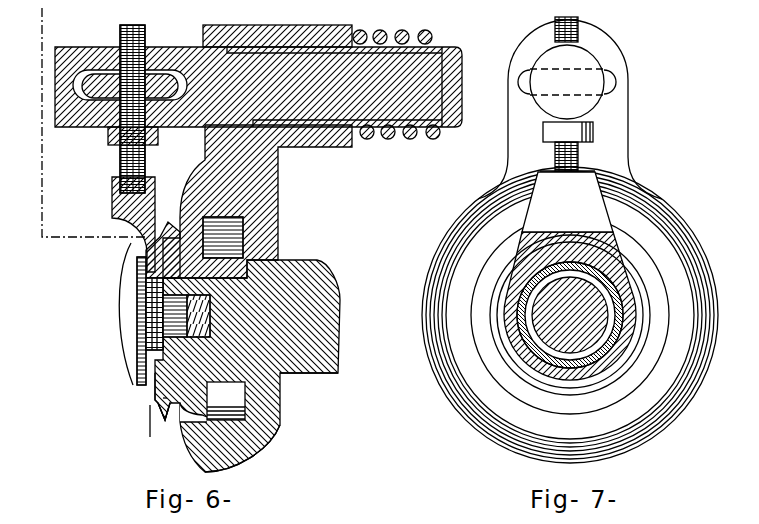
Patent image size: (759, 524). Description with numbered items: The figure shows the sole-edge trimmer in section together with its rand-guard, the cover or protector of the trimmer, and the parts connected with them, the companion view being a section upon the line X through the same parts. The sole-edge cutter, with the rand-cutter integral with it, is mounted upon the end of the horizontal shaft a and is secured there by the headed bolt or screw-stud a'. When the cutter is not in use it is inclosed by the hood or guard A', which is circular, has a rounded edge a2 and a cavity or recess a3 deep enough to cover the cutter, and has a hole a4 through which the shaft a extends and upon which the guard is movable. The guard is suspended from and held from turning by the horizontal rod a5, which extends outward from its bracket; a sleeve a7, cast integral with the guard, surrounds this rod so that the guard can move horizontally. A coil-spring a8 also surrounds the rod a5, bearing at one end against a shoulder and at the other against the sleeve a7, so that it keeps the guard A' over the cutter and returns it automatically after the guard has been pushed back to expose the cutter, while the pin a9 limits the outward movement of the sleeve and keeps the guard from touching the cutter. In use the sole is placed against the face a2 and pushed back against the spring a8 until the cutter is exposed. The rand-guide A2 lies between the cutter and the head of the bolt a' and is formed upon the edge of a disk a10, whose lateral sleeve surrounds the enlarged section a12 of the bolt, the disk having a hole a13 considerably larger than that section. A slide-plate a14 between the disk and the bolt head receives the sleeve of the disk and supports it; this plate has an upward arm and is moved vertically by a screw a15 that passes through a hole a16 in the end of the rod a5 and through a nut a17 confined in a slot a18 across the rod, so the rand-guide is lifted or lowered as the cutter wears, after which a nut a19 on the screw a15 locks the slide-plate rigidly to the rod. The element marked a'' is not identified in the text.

In FIG. 6, the horizontal shaft a is at (309, 383).
In FIG. 6, the headed bolt or screw-stud a' is at (114, 314).
In FIG. 6, the washer plate a'' is at (124, 322).
In FIG. 7, the washer plate a'' is at (543, 315).
In FIG. 6, the rounded edge a2 is at (187, 440).
In FIG. 6, the cavity or recess a3 is at (226, 401).
In FIG. 6, the hole a4 is at (283, 258).
In FIG. 6, the horizontal rod a5 is at (222, 20).
In FIG. 7, the horizontal rod a5 is at (570, 200).
In FIG. 6, the sleeve a7 is at (312, 25).
In FIG. 6, the coil-spring a8 is at (367, 140).
In FIG. 6, the pin a9 is at (284, 170).
In FIG. 6, the disk a10 is at (155, 392).
In FIG. 6, the enlarged section a12 is at (165, 302).
In FIG. 6, the hole a13 is at (146, 282).
In FIG. 6, the slide-plate a14 is at (140, 257).
In FIG. 6, the screw a15 is at (146, 156).
In FIG. 7, the screw a15 is at (580, 155).
In FIG. 6, the hole a16 is at (114, 45).
In FIG. 7, the hole a16 is at (566, 29).
In FIG. 6, the nut a17 is at (165, 45).
In FIG. 6, the slot a18 is at (55, 97).
In FIG. 6, the nut a19 is at (108, 136).
In FIG. 7, the nut a19 is at (595, 130).
In FIG. 6, the hood or guard A' is at (242, 448).
In FIG. 6, the rand-guide A2 is at (165, 405).
In FIG. 7, the rand-guide A2 is at (505, 392).
In FIG. 6, the section line X is at (94, 227).